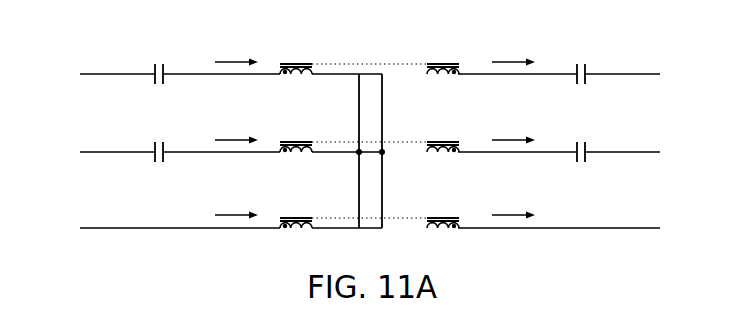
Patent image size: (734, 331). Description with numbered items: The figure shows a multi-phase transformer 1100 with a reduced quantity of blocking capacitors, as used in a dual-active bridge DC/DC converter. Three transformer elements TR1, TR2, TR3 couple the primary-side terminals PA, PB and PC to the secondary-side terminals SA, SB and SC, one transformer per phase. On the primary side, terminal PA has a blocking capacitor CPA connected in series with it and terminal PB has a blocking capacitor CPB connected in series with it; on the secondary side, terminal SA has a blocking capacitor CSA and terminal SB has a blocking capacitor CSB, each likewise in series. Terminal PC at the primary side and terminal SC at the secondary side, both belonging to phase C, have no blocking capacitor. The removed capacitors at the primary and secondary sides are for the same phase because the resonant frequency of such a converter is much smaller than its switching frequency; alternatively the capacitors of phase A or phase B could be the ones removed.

The multi-phase transformer 1100 is at (399, 33).
The transformer phase A TR1 is at (369, 83).
The transformer phase B TR2 is at (369, 161).
The transformer phase C TR3 is at (369, 238).
The primary capacitor phase A CPA is at (139, 85).
The primary capacitor phase B CPB is at (139, 162).
The secondary capacitor phase A CSA is at (605, 85).
The secondary capacitor phase B CSB is at (604, 162).